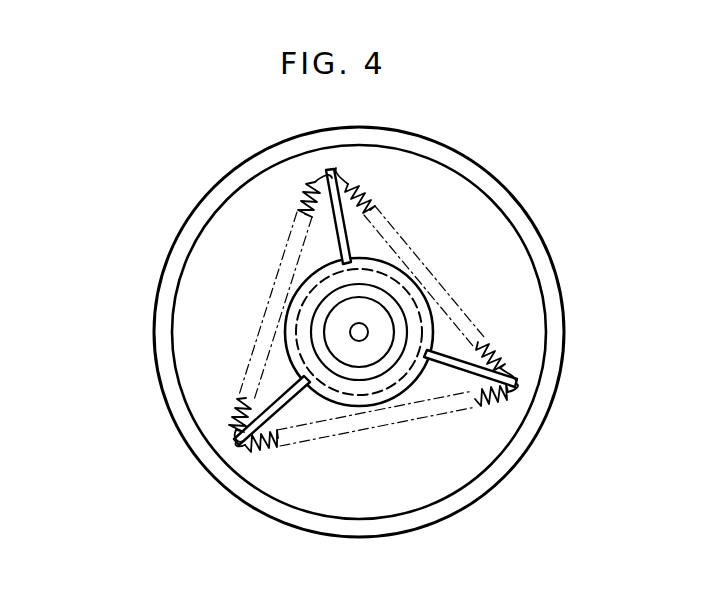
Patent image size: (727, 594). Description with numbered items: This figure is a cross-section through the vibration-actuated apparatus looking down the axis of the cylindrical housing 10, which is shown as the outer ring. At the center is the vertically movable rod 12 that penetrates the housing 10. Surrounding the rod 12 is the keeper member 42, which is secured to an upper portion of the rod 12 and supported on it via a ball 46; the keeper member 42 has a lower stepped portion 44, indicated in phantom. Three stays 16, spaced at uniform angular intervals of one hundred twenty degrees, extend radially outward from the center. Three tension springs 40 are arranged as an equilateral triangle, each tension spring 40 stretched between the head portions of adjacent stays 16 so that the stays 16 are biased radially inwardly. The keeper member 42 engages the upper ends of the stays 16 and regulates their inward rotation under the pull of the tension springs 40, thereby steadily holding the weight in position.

The cylindrical housing 10 is at (539, 207).
The rod 12 is at (368, 331).
The stays 16 is at (341, 221).
The tension springs 40 is at (262, 301).
The keeper member 42 is at (393, 273).
The lower stepped portion 44 is at (368, 395).
The ball 46 is at (353, 355).